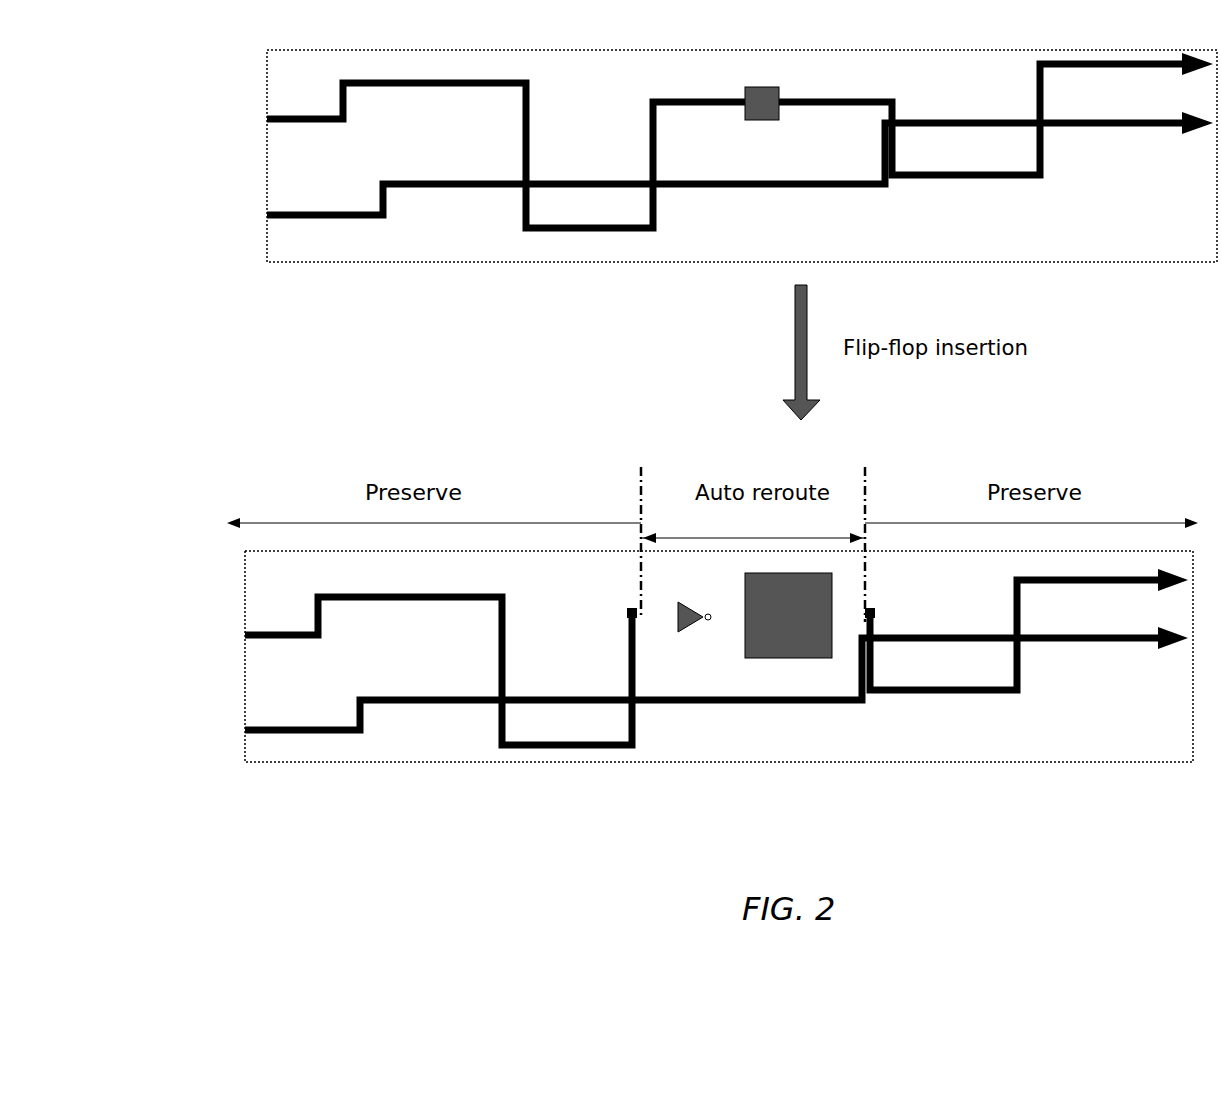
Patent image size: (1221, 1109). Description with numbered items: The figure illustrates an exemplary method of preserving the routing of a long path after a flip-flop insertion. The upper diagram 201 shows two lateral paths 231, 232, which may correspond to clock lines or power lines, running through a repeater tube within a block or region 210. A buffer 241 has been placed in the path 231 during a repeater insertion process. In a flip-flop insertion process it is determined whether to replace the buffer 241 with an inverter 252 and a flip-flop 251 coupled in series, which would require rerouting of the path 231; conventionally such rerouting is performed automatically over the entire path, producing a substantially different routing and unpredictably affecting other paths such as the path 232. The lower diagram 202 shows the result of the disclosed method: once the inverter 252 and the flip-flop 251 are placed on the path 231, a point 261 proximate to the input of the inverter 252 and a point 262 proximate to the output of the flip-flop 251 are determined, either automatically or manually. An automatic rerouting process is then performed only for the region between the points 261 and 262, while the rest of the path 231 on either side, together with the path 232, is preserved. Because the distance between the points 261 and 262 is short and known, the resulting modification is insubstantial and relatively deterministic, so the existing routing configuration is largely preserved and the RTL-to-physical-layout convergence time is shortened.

The diagram 201 is at (267, 88).
The diagram 202 is at (245, 612).
The block / placement region 210 is at (1136, 229).
The lateral path 231 is at (527, 130).
The lateral path 232 is at (403, 187).
The buffer 241 is at (779, 88).
The flip-flop 251 is at (778, 658).
The inverter 252 is at (678, 627).
The point 261 is at (632, 611).
The point 262 is at (870, 611).